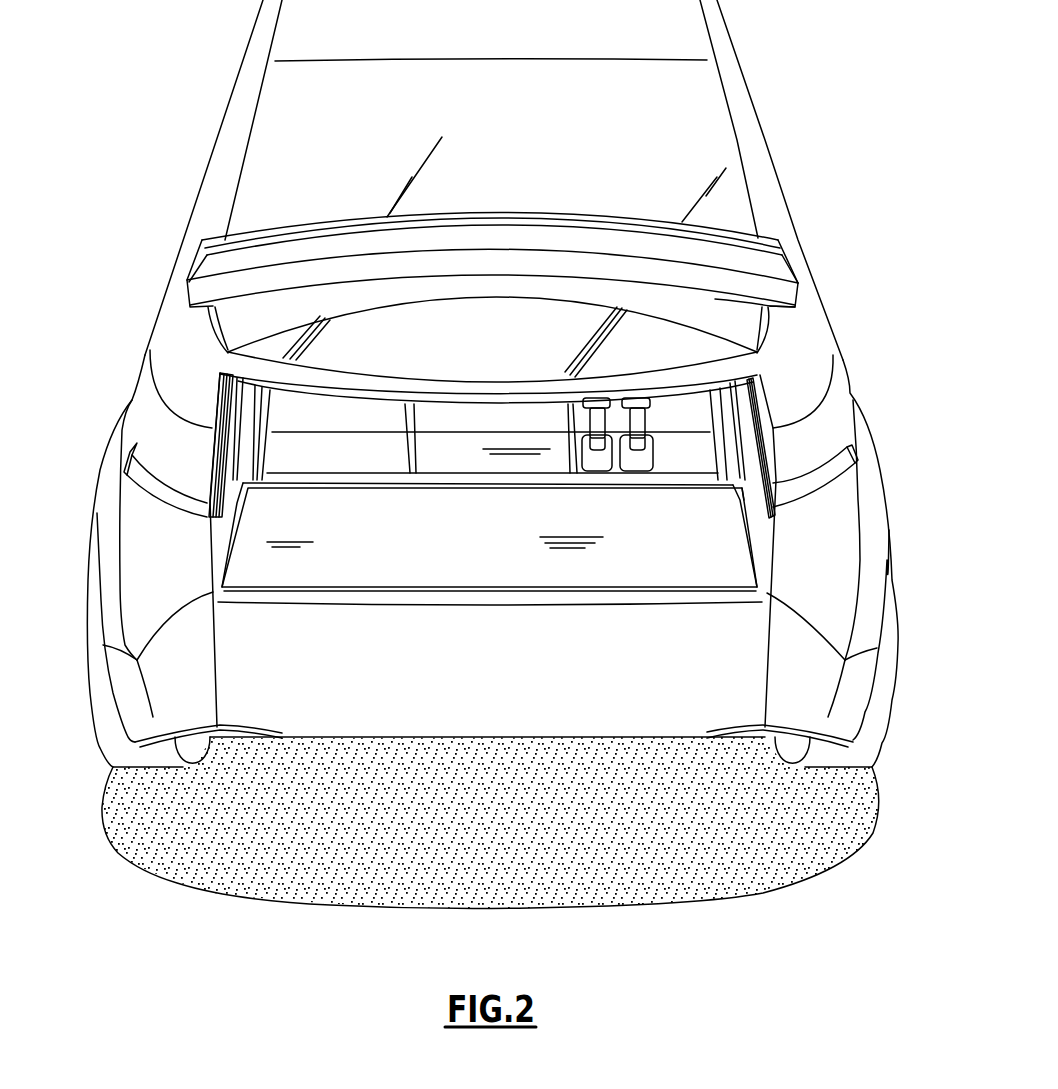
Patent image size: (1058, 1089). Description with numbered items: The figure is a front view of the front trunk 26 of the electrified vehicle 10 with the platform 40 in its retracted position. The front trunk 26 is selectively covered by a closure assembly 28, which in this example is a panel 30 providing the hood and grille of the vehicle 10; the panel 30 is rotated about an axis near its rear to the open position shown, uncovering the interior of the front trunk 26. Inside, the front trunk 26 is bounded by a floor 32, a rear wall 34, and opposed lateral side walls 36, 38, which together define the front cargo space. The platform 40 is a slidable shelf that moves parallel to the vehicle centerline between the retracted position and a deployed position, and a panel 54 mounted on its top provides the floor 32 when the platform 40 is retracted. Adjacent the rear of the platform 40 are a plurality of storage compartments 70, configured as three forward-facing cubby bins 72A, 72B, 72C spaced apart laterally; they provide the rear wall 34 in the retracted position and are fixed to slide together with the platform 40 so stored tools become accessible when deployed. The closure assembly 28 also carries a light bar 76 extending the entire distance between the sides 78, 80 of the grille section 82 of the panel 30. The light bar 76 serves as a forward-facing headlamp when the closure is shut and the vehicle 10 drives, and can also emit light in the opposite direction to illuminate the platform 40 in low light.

The vehicle 10 is at (831, 214).
The front trunk 26 is at (214, 525).
The closure assembly 28 is at (806, 284).
The panel 30 is at (788, 333).
The floor 32 is at (352, 566).
The rear wall 34 is at (742, 414).
The lateral side wall 36 is at (223, 422).
The lateral side wall 38 is at (745, 514).
The platform 40 is at (207, 583).
The panel 54 is at (650, 553).
The storage compartments 70 is at (282, 450).
The storage compartment 72A is at (348, 455).
The storage compartment 72B is at (468, 455).
The storage compartment 72C is at (671, 452).
The light bar 76 is at (291, 237).
The side 78 is at (182, 297).
The side 80 is at (806, 297).
The grille section 82 is at (778, 267).